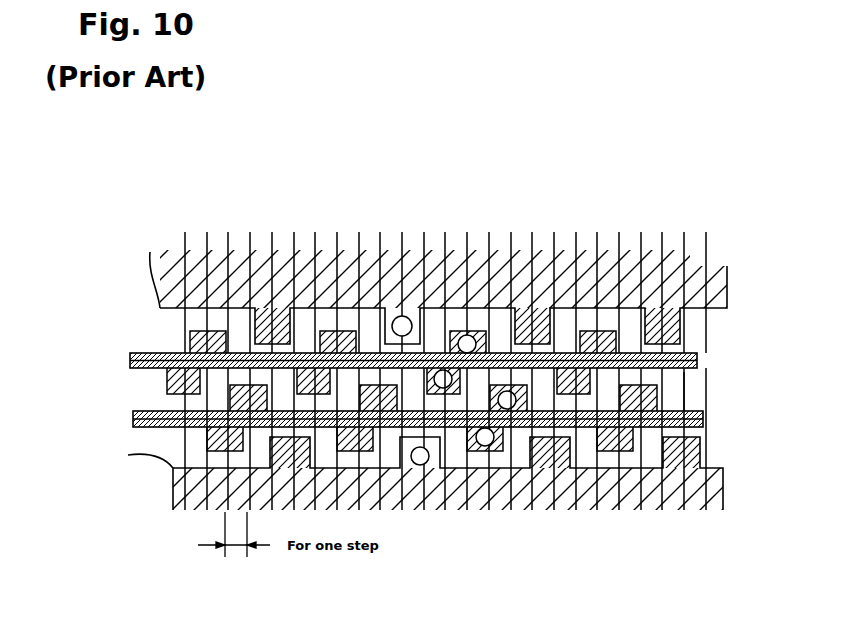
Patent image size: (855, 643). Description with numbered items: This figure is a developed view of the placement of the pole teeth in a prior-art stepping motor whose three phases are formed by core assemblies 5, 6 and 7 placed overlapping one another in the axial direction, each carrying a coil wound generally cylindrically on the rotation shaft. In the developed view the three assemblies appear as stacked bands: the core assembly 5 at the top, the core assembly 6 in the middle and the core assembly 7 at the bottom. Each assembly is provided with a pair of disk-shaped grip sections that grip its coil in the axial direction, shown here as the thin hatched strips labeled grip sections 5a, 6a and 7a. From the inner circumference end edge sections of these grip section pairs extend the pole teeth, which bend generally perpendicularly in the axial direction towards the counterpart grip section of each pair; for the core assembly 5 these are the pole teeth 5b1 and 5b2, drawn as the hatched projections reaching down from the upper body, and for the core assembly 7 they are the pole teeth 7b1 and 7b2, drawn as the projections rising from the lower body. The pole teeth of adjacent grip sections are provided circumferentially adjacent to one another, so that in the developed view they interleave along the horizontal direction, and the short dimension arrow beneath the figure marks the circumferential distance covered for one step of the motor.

The core assembly 5 is at (391, 277).
The grip section 5a is at (690, 353).
The pole tooth 5b1 is at (363, 310).
The pole tooth 5b2 is at (273, 337).
The core assembly 6 is at (398, 388).
The grip section 6a is at (418, 388).
The core assembly 7 is at (384, 469).
The grip section 7a is at (157, 428).
The pole tooth 7b1 is at (473, 470).
The pole tooth 7b2 is at (558, 453).